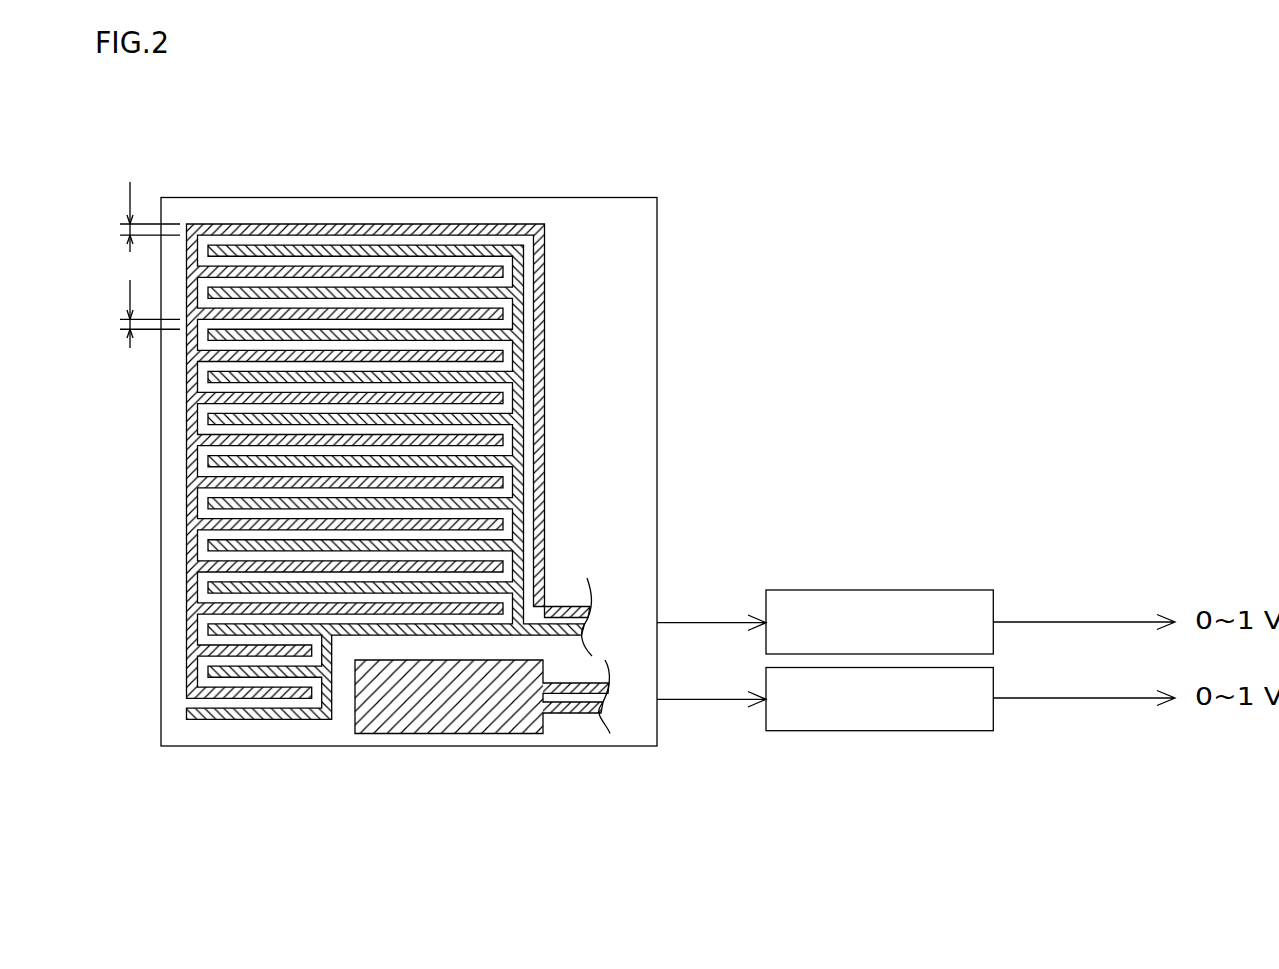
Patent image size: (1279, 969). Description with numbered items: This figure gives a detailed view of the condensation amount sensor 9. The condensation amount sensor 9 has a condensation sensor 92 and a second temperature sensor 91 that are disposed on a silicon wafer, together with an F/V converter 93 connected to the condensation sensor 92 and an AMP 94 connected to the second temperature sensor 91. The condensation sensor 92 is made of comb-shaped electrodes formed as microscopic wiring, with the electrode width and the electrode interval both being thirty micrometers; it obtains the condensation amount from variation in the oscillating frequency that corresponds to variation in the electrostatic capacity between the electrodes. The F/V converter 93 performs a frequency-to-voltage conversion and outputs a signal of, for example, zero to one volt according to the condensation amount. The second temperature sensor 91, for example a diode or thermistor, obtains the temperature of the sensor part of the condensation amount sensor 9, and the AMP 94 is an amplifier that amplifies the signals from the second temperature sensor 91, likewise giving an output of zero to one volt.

The condensation amount sensor 9 is at (1006, 150).
The second temperature sensor 91 is at (450, 717).
The condensation sensor 92 is at (524, 212).
The F/V converter 93 is at (879, 622).
The AMP 94 is at (879, 699).